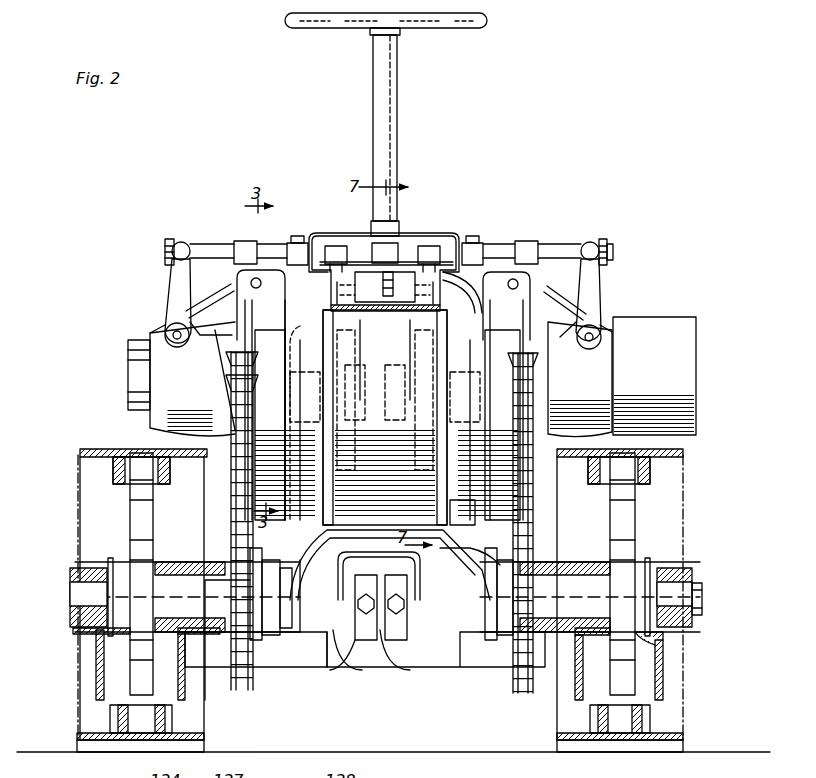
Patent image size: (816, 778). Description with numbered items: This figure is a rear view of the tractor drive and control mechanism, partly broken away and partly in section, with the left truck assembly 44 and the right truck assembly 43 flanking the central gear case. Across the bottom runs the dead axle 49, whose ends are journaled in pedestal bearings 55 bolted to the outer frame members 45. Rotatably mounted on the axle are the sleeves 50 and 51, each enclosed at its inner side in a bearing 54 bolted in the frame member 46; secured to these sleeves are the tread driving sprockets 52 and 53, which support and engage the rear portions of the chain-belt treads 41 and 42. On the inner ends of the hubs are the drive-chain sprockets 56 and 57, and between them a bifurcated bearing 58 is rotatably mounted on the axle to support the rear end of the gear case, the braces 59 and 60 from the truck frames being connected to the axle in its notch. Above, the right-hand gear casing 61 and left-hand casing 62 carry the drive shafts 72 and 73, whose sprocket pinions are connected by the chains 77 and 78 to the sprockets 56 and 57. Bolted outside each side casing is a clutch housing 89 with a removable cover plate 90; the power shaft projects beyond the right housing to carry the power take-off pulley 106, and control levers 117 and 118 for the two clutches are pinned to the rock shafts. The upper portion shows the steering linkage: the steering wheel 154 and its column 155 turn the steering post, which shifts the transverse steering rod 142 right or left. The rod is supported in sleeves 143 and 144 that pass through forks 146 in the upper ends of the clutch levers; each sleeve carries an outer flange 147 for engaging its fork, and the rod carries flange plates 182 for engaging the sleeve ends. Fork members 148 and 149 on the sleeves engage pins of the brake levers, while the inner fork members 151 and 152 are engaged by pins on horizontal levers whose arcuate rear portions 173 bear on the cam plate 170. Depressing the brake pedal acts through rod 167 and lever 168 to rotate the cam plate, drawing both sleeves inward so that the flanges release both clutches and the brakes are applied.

The steering wheel 154 is at (465, 25).
The column 155 is at (393, 106).
The sleeve 144 is at (200, 245).
The fork member 149 is at (243, 242).
The fork member 152 is at (320, 243).
The arcuate rear portion 173 is at (358, 243).
The steering rod 142 is at (420, 252).
The cam plate 170 is at (388, 290).
The fork member 151 is at (448, 248).
The fork member 148 is at (534, 241).
The sleeve 143 is at (556, 247).
The fork 146 is at (594, 243).
The flange 147 is at (604, 246).
The flange plate 182 is at (613, 252).
The control lever 118 is at (172, 287).
The control lever 117 is at (599, 299).
The cover plate 90 is at (548, 300).
The lever 168 is at (290, 306).
The rod 167 is at (300, 326).
The left-hand gear casing 62 is at (292, 494).
The drive shaft 73 is at (294, 378).
The drive shaft 72 is at (455, 378).
The chain 77 is at (560, 460).
The clutch housing 89 is at (575, 418).
The power take-off pulley 106 is at (659, 319).
The chain 78 is at (233, 512).
The left pedestal 44 is at (74, 664).
The tread driving sprocket 53 is at (151, 519).
The chain-belt tread 42 is at (198, 734).
The outer frame member 45 is at (98, 684).
The frame member 46 is at (185, 686).
The sleeve 51 is at (180, 573).
The pedestal bearing 55 is at (88, 572).
The sleeve 50 is at (558, 580).
The bearing 54 is at (584, 572).
The dead axle 49 is at (691, 602).
The brace 59 is at (205, 565).
The drive-chain sprocket 57 is at (258, 546).
The brace 60 is at (455, 655).
The bifurcated bearing 58 is at (460, 556).
The drive-chain sprocket 56 is at (512, 525).
The right-hand gear casing 61 is at (480, 493).
The right pedestal 43 is at (676, 657).
The tread driving sprocket 52 is at (623, 523).
The chain-belt tread 41 is at (683, 736).